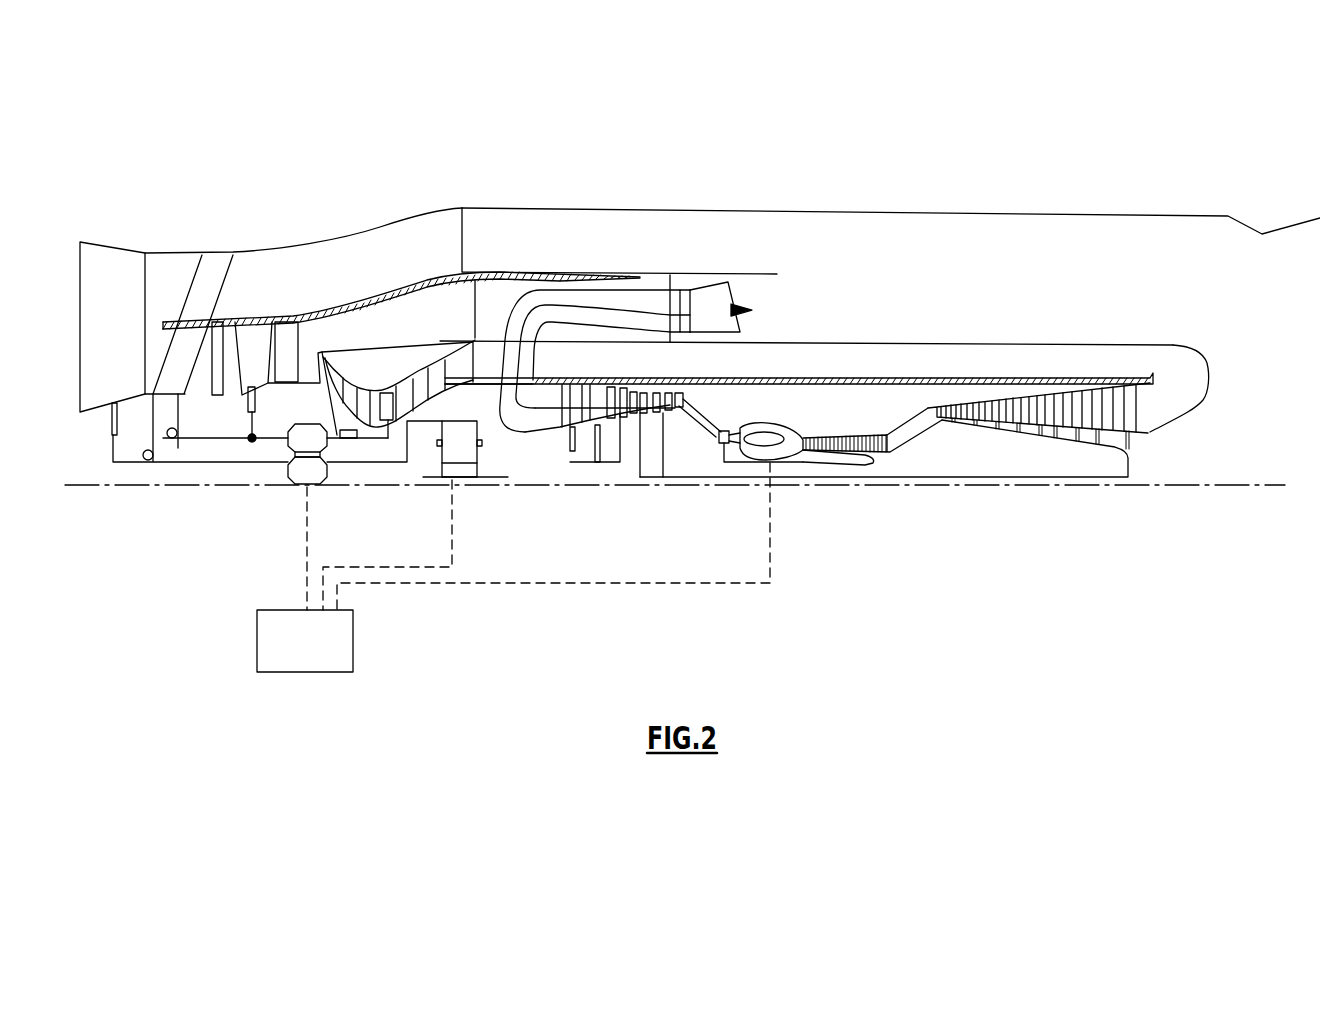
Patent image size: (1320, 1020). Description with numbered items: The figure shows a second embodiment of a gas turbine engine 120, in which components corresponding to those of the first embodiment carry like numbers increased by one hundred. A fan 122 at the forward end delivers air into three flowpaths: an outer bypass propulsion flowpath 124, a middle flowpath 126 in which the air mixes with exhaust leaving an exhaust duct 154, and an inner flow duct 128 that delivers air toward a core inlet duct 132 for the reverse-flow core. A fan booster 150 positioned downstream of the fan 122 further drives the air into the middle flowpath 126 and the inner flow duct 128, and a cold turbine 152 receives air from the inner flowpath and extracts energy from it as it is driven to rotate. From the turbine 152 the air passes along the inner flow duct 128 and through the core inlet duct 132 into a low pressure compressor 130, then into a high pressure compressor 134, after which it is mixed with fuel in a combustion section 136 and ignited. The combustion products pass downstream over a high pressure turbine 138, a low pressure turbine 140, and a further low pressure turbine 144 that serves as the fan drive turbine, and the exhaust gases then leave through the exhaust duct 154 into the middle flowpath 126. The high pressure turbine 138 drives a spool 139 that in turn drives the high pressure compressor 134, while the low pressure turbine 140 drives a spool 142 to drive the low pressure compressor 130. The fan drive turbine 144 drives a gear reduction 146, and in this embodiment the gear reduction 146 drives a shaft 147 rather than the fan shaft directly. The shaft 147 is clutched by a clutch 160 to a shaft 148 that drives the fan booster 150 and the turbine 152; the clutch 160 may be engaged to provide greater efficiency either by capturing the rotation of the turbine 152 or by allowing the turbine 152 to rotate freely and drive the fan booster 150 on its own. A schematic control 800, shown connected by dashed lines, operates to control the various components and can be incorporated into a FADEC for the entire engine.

The gas turbine engine embodiment 120 is at (968, 180).
The fan 122 is at (110, 275).
The outer bypass propulsion flowpath 124 is at (942, 256).
The middle flowpath 126 is at (978, 323).
The inner flow duct 128 is at (1047, 376).
The low pressure compressor 130 is at (1075, 390).
The core inlet duct 132 is at (1190, 383).
The high pressure compressor 134 is at (852, 442).
The combustion section 136 is at (760, 461).
The high pressure turbine 138 is at (713, 441).
The spool 139 is at (833, 464).
The low pressure turbine 140 is at (648, 420).
The spool 142 is at (940, 477).
The fan drive turbine 144 is at (570, 438).
The gear reduction 146 is at (455, 443).
The shaft 147 is at (378, 462).
The shaft 148 is at (197, 445).
The fan booster 150 is at (248, 380).
The turbine 152 is at (360, 395).
The exhaust duct 154 is at (710, 300).
The clutch 160 is at (327, 456).
The schematic control 800 is at (285, 656).